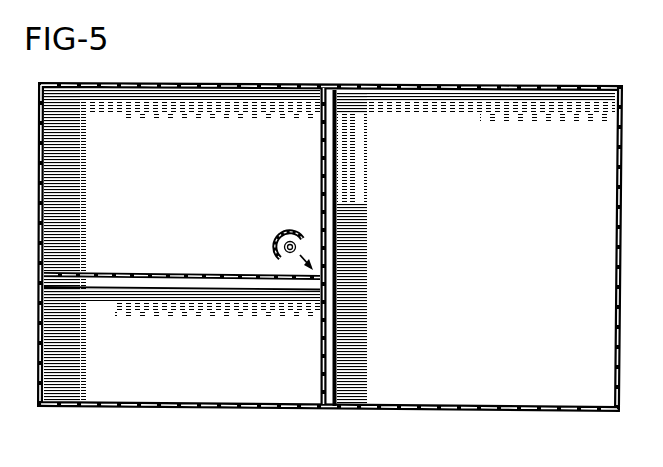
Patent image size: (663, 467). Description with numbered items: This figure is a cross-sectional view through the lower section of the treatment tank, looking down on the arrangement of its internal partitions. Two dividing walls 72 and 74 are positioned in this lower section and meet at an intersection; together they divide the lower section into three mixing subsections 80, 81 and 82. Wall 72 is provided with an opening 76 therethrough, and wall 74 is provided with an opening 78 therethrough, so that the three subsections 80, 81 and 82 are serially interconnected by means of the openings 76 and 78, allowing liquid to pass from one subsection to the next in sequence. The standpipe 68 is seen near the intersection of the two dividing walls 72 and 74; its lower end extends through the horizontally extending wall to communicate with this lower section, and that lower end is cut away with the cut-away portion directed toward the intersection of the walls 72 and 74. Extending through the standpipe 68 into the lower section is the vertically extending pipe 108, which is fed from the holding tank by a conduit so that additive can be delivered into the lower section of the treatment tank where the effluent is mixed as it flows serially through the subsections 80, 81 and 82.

The standpipe 68 is at (285, 233).
The dividing wall 72 is at (200, 279).
The dividing wall 74 is at (320, 332).
The opening 76 is at (79, 272).
The opening 78 is at (322, 370).
The mixing subsection 80 is at (172, 158).
The mixing subsection 81 is at (151, 363).
The mixing subsection 82 is at (477, 229).
The vertically extending pipe 108 is at (296, 249).